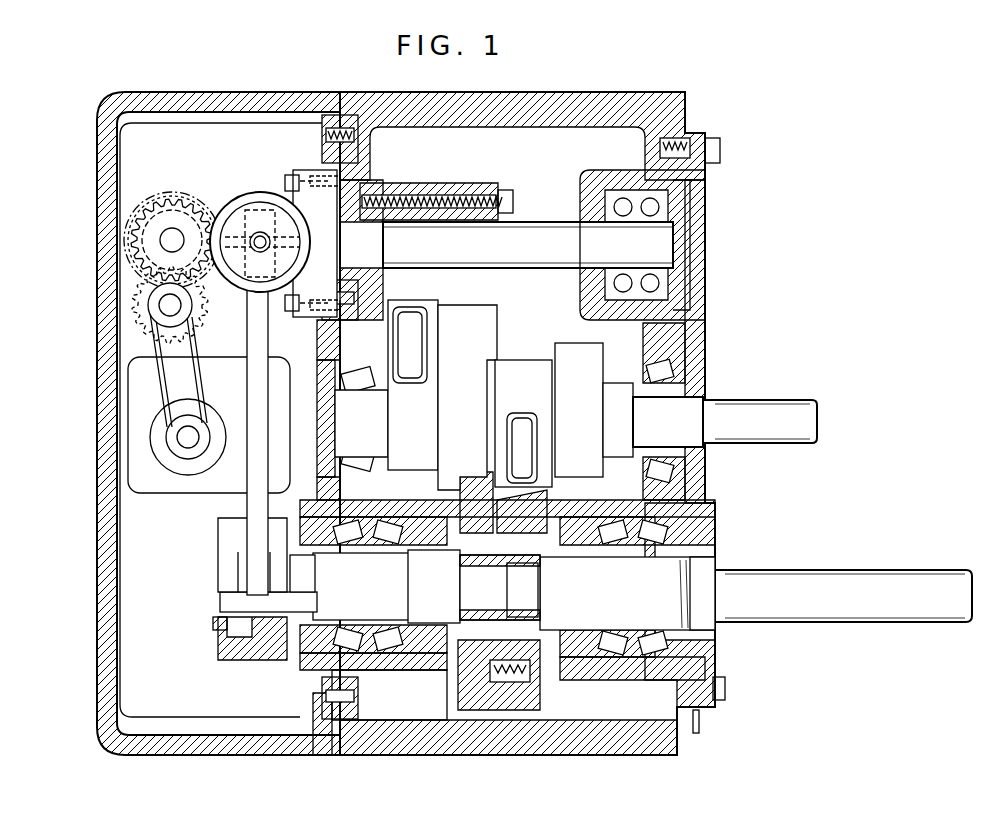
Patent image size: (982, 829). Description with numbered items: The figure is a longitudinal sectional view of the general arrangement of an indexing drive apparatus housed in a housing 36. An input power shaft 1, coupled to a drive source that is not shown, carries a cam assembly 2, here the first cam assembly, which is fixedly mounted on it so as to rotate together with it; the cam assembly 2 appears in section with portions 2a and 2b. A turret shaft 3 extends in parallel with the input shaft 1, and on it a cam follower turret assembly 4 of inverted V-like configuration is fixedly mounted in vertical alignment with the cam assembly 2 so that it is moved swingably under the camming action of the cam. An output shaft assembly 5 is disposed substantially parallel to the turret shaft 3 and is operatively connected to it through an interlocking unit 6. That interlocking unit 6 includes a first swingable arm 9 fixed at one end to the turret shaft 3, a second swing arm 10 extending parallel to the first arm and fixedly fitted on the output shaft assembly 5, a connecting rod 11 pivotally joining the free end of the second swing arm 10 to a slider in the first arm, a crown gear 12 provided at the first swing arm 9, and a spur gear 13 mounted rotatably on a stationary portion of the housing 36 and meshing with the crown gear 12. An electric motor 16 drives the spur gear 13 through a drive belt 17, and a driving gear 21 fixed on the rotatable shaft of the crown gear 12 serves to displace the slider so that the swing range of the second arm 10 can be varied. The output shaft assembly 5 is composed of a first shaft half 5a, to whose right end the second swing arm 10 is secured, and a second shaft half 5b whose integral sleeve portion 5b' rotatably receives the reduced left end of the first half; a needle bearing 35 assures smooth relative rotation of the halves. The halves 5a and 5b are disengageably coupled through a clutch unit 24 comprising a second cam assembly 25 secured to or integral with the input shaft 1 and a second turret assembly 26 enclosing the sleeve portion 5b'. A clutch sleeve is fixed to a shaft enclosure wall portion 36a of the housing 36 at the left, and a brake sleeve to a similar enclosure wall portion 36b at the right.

The input power shaft 1 is at (758, 403).
The cam assembly 2 is at (484, 337).
The gear 2a is at (410, 447).
The gear 2b is at (470, 403).
The turret shaft 3 is at (545, 233).
The cam follower turret assembly 4 is at (418, 182).
The output shaft assembly 5 is at (770, 568).
The first shaft half 5a is at (275, 615).
The second shaft half 5b is at (719, 604).
The sleeve portion 5b' is at (444, 586).
The interlocking unit 6 is at (222, 192).
The first swingable arm 9 is at (287, 187).
The second swing arm 10 is at (227, 555).
The connecting rod 11 is at (252, 478).
The crown gear 12 is at (128, 263).
The spur gear 13 is at (132, 290).
The electric motor 16 is at (163, 480).
The drive belt 17 is at (204, 377).
The driving gear 21 is at (210, 217).
The clutch unit 24 is at (543, 707).
The second cam assembly 25 is at (583, 350).
The second turret assembly 26 is at (462, 685).
The needle bearing 35 is at (520, 563).
The housing 36 is at (102, 518).
The shaft enclosure wall portion 36a is at (402, 673).
The enclosure wall portion 36b is at (608, 682).